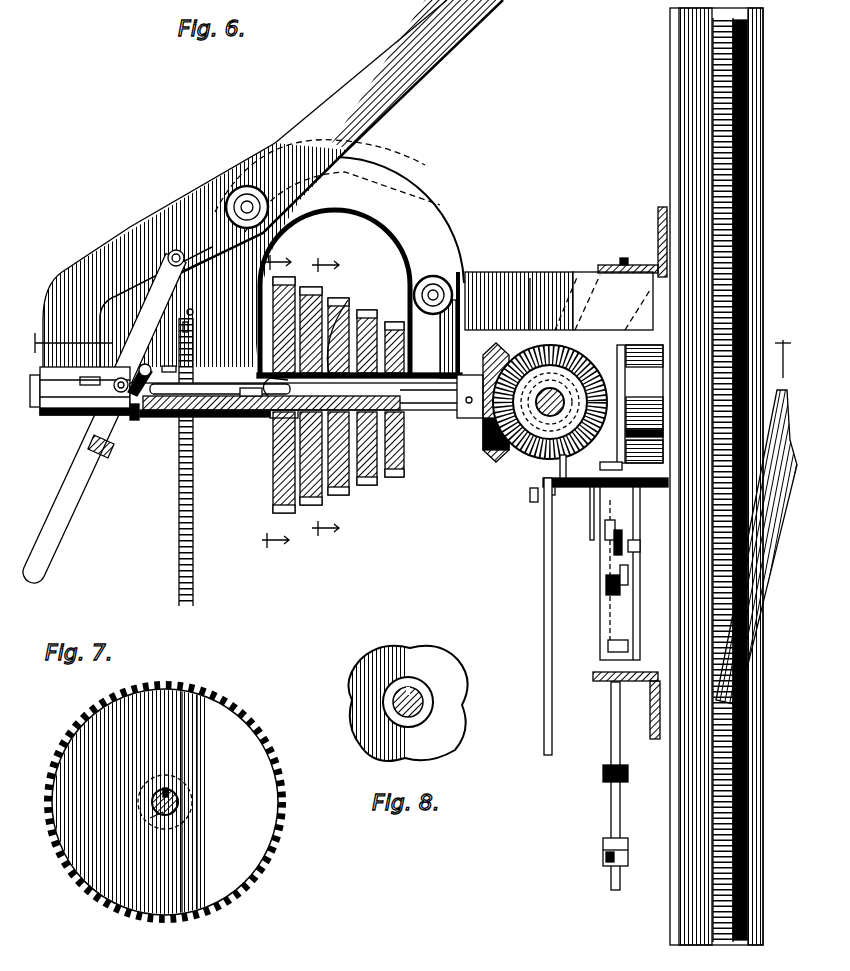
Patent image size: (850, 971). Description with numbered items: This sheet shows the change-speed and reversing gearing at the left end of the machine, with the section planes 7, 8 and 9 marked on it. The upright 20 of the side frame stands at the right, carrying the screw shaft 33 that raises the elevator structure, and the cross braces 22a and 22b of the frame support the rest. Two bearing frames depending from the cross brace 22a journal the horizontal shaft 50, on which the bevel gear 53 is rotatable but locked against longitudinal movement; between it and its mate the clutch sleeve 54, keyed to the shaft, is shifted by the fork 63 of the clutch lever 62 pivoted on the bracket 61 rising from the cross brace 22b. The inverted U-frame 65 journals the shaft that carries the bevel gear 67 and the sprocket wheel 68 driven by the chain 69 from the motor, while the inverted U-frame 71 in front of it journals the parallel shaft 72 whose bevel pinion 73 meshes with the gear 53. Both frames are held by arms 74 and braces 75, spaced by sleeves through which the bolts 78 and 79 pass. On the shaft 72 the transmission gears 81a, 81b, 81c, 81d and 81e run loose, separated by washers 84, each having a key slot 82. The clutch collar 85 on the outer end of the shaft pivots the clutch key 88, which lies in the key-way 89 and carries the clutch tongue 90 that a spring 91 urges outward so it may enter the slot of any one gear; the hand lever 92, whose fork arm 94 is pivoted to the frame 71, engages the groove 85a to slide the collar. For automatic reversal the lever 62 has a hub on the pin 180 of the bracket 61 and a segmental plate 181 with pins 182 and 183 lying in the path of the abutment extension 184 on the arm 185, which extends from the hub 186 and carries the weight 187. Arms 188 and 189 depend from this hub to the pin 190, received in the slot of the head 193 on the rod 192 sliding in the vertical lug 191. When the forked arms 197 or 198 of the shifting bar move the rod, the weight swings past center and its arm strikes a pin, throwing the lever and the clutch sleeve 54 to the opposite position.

In FIG. 6, the plane 7- 7 is at (276, 403).
In FIG. 6, the plane 8- 8 is at (325, 397).
In FIG. 6, the plane 9- 9 is at (410, 352).
In FIG. 6, the upright 20 is at (671, 126).
In FIG. 6, the cross brace 22a is at (645, 265).
In FIG. 6, the cross brace 22b is at (616, 688).
In FIG. 6, the screw shaft 33 is at (748, 158).
In FIG. 6, the horizontal shaft 50 is at (545, 412).
In FIG. 6, the bevel gear 53 is at (505, 425).
In FIG. 6, the clutch sleeve 54 is at (529, 304).
In FIG. 6, the bracket 61 is at (640, 621).
In FIG. 6, the clutch lever 62 is at (544, 693).
In FIG. 6, the fork 63 is at (604, 301).
In FIG. 6, the inverted U-frame 65 is at (228, 265).
In FIG. 6, the bevel gear 67 is at (484, 370).
In FIG. 6, the sprocket wheel 68 is at (186, 322).
In FIG. 6, the chain 69 is at (179, 518).
In FIG. 6, the inverted U-frame 71 is at (110, 248).
In FIG. 6, the shaft 72 is at (35, 412).
In FIG. 7, the shaft 72 is at (178, 806).
In FIG. 8, the shaft 72 is at (424, 704).
In FIG. 6, the bevel pinion 73 is at (485, 425).
In FIG. 6, the arm 74 is at (522, 286).
In FIG. 6, the brace 75 is at (392, 88).
In FIG. 6, the bolt 78 is at (447, 288).
In FIG. 6, the bolt 79 is at (245, 200).
In FIG. 6, the transmission gear 81a is at (284, 514).
In FIG. 6, the transmission gear 81b is at (312, 506).
In FIG. 6, the transmission gear 81c is at (340, 496).
In FIG. 6, the transmission gear 81d is at (368, 486).
In FIG. 6, the transmission gear 81e is at (398, 478).
In FIG. 6, the key slot 82 is at (345, 335).
In FIG. 6, the washer 84 is at (272, 470).
In FIG. 7, the washer 84 is at (160, 790).
In FIG. 8, the washer 84 is at (404, 728).
In FIG. 6, the clutch collar 85 is at (135, 412).
In FIG. 6, the groove 85a is at (133, 420).
In FIG. 6, the clutch key 88 is at (222, 395).
In FIG. 6, the key-way 89 is at (247, 400).
In FIG. 7, the key-way 89 is at (182, 797).
In FIG. 8, the key-way 89 is at (418, 690).
In FIG. 6, the clutch tongue 90 is at (272, 382).
In FIG. 7, the clutch tongue 90 is at (172, 790).
In FIG. 7, the spring 91 is at (163, 816).
In FIG. 6, the hand lever 92 is at (50, 556).
In FIG. 6, the fork arm 94 is at (145, 319).
In FIG. 6, the pin 180 is at (530, 496).
In FIG. 6, the segmental plate 181 is at (590, 465).
In FIG. 6, the pin 182 is at (640, 438).
In FIG. 6, the pin 183 is at (660, 456).
In FIG. 6, the abutment extension 184 is at (560, 492).
In FIG. 6, the arm 185 is at (622, 470).
In FIG. 6, the hub 186 is at (605, 530).
In FIG. 6, the weight 187 is at (655, 358).
In FIG. 6, the arm 188 is at (614, 548).
In FIG. 6, the arm 189 is at (608, 580).
In FIG. 6, the pin 190 is at (640, 547).
In FIG. 6, the vertical lug 191 is at (612, 646).
In FIG. 6, the rod 192 is at (611, 815).
In FIG. 6, the head 193 is at (597, 589).
In FIG. 6, the arm 197 is at (603, 774).
In FIG. 6, the arm 198 is at (603, 854).